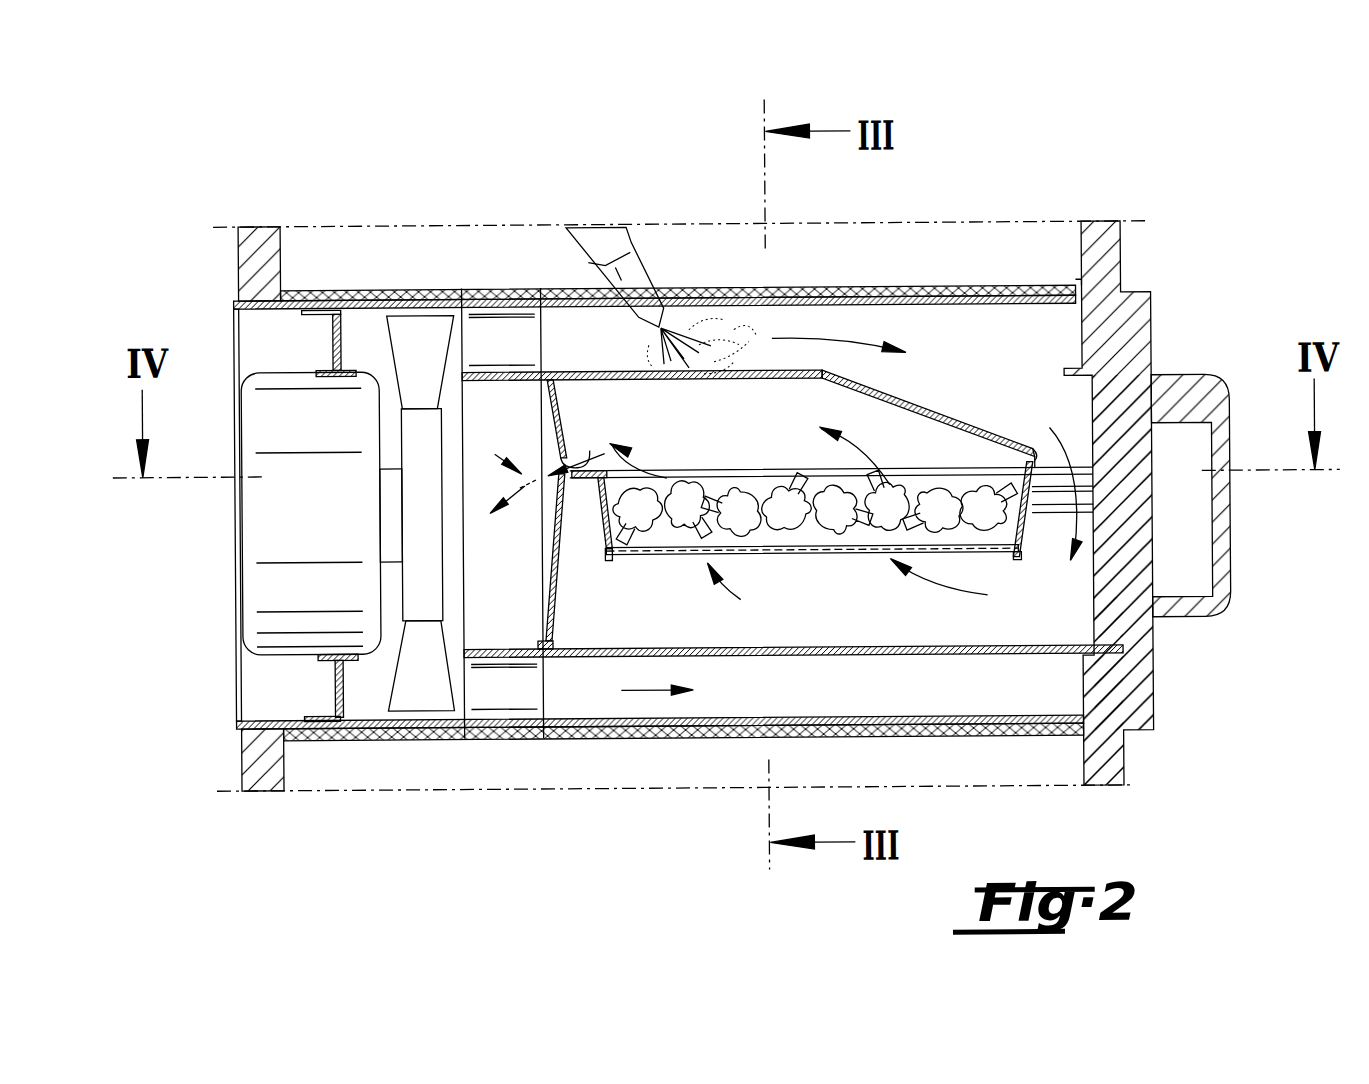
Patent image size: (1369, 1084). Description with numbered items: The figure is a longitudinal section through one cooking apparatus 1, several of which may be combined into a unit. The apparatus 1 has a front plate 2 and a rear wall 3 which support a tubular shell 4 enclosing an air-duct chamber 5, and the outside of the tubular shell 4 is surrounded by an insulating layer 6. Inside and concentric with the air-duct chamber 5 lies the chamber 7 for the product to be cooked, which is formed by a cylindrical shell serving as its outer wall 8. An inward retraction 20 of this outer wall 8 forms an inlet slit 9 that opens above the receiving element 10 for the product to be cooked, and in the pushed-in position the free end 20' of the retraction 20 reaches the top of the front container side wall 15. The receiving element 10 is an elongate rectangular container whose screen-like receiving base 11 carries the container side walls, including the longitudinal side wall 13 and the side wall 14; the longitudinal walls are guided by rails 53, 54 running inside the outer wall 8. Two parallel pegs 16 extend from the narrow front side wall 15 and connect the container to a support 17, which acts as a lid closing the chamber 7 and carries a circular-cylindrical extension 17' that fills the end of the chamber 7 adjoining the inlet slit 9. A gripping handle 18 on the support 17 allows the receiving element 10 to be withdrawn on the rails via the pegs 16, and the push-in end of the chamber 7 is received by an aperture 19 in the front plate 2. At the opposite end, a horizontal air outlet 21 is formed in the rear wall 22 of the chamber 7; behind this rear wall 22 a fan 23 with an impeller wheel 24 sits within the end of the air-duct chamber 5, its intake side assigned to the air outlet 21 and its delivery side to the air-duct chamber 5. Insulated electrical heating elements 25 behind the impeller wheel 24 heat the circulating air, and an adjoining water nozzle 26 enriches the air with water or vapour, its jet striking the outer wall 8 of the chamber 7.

The apparatus 1 is at (1222, 205).
The front plate 2 is at (1113, 760).
The rear wall 3 is at (263, 764).
The tubular shell 4 is at (652, 740).
The air-duct chamber 5 is at (578, 712).
The insulating layer 6 is at (692, 735).
The chamber for the product to be cooked 7 is at (960, 635).
The outer wall 8 is at (880, 658).
The inlet slit 9 is at (1058, 418).
The receiving element for the product to be cooked 10 is at (599, 578).
The receiving base 11 is at (840, 554).
The container side wall 13 is at (770, 485).
The container side wall 14 is at (603, 521).
The container side wall 15 is at (1020, 536).
The pegs 16 is at (1087, 515).
The support 17 is at (1208, 552).
The extension 17' is at (1214, 634).
The gripping handle 18 is at (1217, 601).
The aperture 19 is at (1100, 658).
The retraction 20 is at (748, 391).
The free end 20' is at (1027, 403).
The air outlet 21 is at (590, 450).
The rear wall 22 is at (562, 539).
The fan 23 is at (270, 575).
The impeller wheel 24 is at (425, 353).
The heating elements 25 is at (515, 336).
The water nozzle 26 is at (620, 277).
The rail 53 is at (717, 472).
The rail 54 is at (1090, 491).